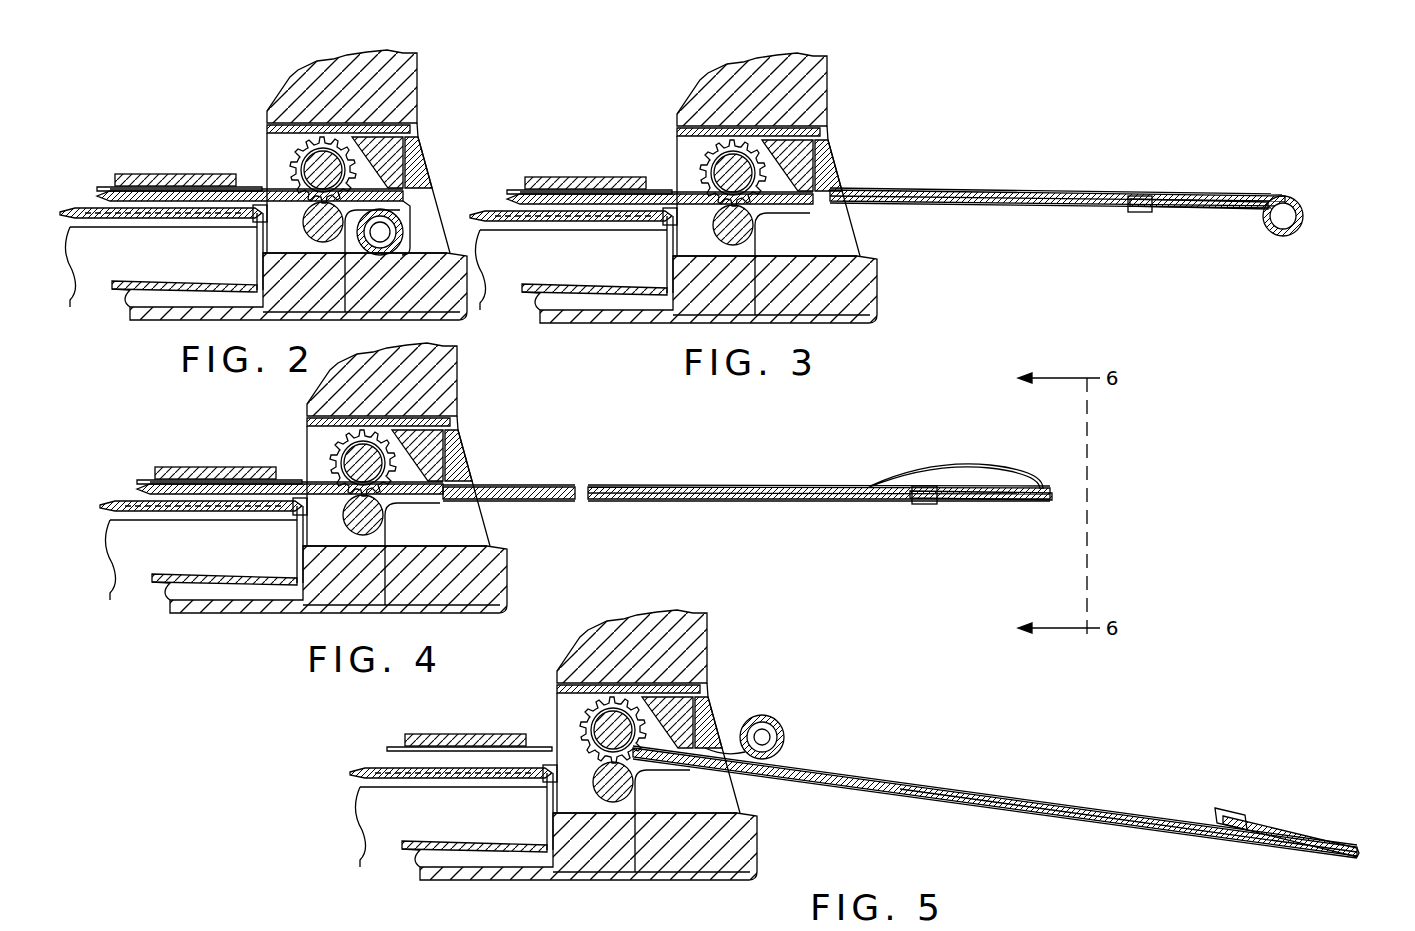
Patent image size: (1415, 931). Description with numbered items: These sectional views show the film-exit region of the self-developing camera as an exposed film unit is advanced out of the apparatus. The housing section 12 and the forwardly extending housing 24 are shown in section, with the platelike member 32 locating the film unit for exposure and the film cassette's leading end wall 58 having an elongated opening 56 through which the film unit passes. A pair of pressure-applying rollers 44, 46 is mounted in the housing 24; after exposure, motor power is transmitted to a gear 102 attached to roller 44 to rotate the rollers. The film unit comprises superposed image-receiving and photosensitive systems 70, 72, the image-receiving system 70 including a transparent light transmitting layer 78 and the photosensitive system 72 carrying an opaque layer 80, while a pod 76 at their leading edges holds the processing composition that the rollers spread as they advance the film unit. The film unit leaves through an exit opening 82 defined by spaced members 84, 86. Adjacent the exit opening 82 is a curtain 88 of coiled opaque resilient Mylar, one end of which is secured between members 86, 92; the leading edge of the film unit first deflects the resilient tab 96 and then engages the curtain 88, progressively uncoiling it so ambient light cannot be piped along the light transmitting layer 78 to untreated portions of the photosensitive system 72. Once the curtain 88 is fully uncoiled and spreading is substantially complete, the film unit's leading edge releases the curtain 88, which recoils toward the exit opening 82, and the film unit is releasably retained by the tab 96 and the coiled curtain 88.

In FIG. 2, the housing section 12 is at (432, 76).
In FIG. 3, the housing section 12 is at (838, 112).
In FIG. 4, the housing section 12 is at (480, 395).
In FIG. 5, the housing section 12 is at (722, 628).
In FIG. 2, the housing 24 is at (480, 305).
In FIG. 3, the housing 24 is at (900, 298).
In FIG. 4, the housing 24 is at (530, 580).
In FIG. 5, the housing 24 is at (780, 848).
In FIG. 2, the platelike member 32 is at (183, 173).
In FIG. 3, the platelike member 32 is at (625, 176).
In FIG. 4, the platelike member 32 is at (222, 466).
In FIG. 5, the platelike member 32 is at (487, 733).
In FIG. 2, the roller 44 is at (313, 173).
In FIG. 3, the roller 44 is at (723, 176).
In FIG. 4, the roller 44 is at (357, 460).
In FIG. 5, the roller 44 is at (600, 733).
In FIG. 2, the roller 46 is at (305, 234).
In FIG. 3, the roller 46 is at (715, 232).
In FIG. 4, the roller 46 is at (348, 518).
In FIG. 5, the roller 46 is at (597, 782).
In FIG. 2, the elongated opening 56 is at (252, 220).
In FIG. 3, the elongated opening 56 is at (654, 225).
In FIG. 4, the elongated opening 56 is at (283, 508).
In FIG. 5, the elongated opening 56 is at (537, 773).
In FIG. 2, the leading end wall 58 is at (258, 250).
In FIG. 3, the leading end wall 58 is at (665, 250).
In FIG. 4, the leading end wall 58 is at (292, 545).
In FIG. 5, the leading end wall 58 is at (548, 800).
In FIG. 2, the image-receiving system 70 is at (250, 195).
In FIG. 3, the image-receiving system 70 is at (1038, 192).
In FIG. 4, the image-receiving system 70 is at (730, 486).
In FIG. 5, the image-receiving system 70 is at (1103, 793).
In FIG. 3, the photosensitive system 72 is at (1024, 204).
In FIG. 4, the photosensitive system 72 is at (690, 501).
In FIG. 5, the photosensitive system 72 is at (1027, 798).
In FIG. 2, the pod 76 is at (408, 140).
In FIG. 3, the pod 76 is at (1212, 209).
In FIG. 4, the pod 76 is at (236, 510).
In FIG. 5, the pod 76 is at (495, 777).
In FIG. 3, the light transmitting layer 78 is at (995, 190).
In FIG. 4, the light transmitting layer 78 is at (653, 485).
In FIG. 5, the light transmitting layer 78 is at (1007, 775).
In FIG. 3, the opaque layer 80 is at (1050, 207).
In FIG. 4, the opaque layer 80 is at (762, 501).
In FIG. 5, the opaque layer 80 is at (1143, 812).
In FIG. 2, the exit opening 82 is at (424, 199).
In FIG. 3, the exit opening 82 is at (862, 222).
In FIG. 4, the exit opening 82 is at (498, 524).
In FIG. 5, the exit opening 82 is at (752, 781).
In FIG. 2, the member 84 is at (440, 249).
In FIG. 3, the member 84 is at (857, 253).
In FIG. 4, the member 84 is at (485, 546).
In FIG. 5, the member 84 is at (742, 812).
In FIG. 2, the member 86 is at (418, 143).
In FIG. 3, the member 86 is at (808, 173).
In FIG. 4, the member 86 is at (433, 448).
In FIG. 5, the member 86 is at (685, 705).
In FIG. 2, the curtain 88 is at (418, 223).
In FIG. 3, the curtain 88 is at (1298, 203).
In FIG. 4, the curtain 88 is at (993, 467).
In FIG. 5, the curtain 88 is at (770, 723).
In FIG. 2, the member 92 is at (430, 160).
In FIG. 3, the member 92 is at (830, 160).
In FIG. 4, the member 92 is at (462, 453).
In FIG. 5, the member 92 is at (708, 722).
In FIG. 2, the resilient tab 96 is at (372, 261).
In FIG. 3, the resilient tab 96 is at (760, 240).
In FIG. 4, the resilient tab 96 is at (388, 520).
In FIG. 5, the resilient tab 96 is at (638, 790).
In FIG. 2, the gear 102 is at (297, 150).
In FIG. 3, the gear 102 is at (715, 158).
In FIG. 4, the gear 102 is at (333, 470).
In FIG. 5, the gear 102 is at (583, 705).